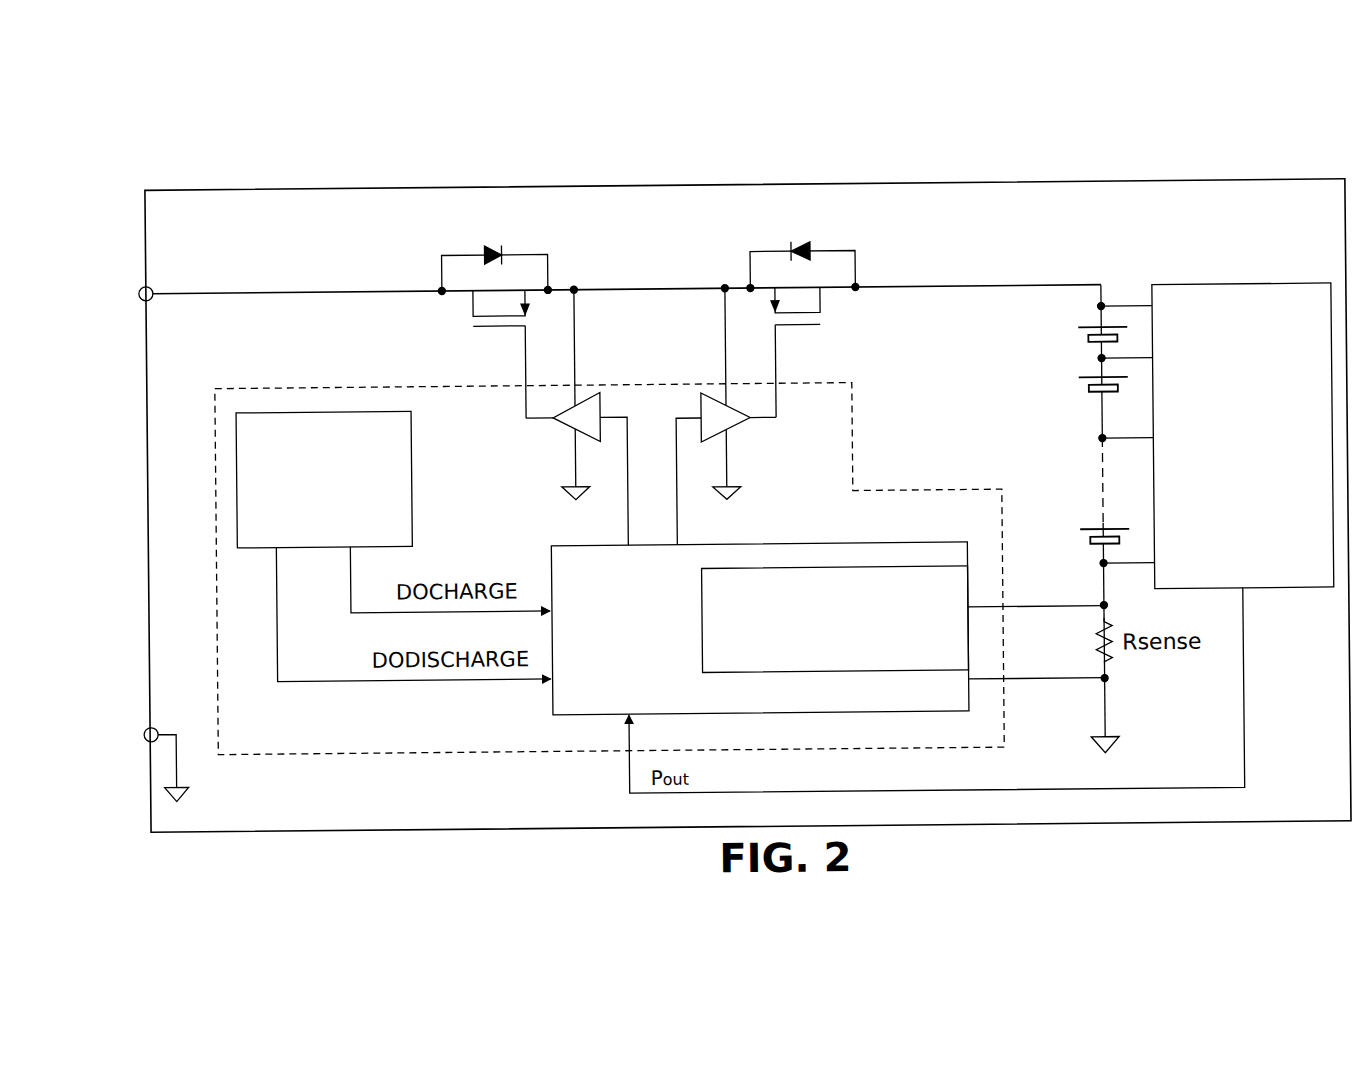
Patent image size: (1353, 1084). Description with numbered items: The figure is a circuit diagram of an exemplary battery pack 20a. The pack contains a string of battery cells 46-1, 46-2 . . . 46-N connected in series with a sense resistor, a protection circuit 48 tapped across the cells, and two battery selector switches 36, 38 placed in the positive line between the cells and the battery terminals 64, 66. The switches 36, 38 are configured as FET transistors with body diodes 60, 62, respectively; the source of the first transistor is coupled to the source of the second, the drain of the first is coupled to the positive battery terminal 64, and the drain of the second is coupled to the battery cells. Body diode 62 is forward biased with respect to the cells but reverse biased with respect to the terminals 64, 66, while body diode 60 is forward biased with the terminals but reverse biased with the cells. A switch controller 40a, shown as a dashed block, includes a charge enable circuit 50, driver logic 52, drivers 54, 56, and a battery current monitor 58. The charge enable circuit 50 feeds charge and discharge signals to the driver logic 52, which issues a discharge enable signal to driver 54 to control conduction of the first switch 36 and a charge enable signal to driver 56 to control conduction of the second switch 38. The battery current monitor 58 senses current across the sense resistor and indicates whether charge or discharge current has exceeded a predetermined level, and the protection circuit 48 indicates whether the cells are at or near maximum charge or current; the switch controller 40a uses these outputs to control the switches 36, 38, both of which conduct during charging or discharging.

The battery pack 20a is at (960, 175).
The battery selector switch 36 is at (480, 328).
The battery selector switch 38 is at (817, 332).
The switch controller 40a is at (333, 750).
The battery cell 46-1 is at (1074, 332).
The battery cell 46-2 is at (1075, 387).
The battery cell 46-N is at (1076, 534).
The protection circuit 48 is at (1279, 596).
The charge enable circuit 50 is at (412, 516).
The driver logic 52 is at (548, 704).
The driver 54 is at (561, 424).
The driver 56 is at (746, 431).
The battery current monitor 58 is at (843, 674).
The body diode 60 is at (506, 253).
The body diode 62 is at (813, 252).
The battery terminal 64 is at (141, 289).
The battery terminal 66 is at (141, 730).